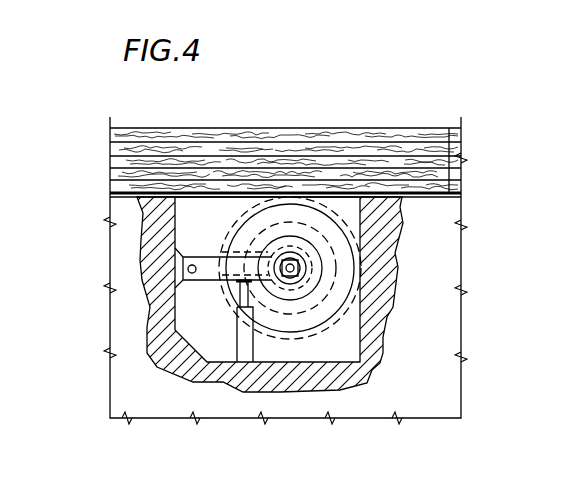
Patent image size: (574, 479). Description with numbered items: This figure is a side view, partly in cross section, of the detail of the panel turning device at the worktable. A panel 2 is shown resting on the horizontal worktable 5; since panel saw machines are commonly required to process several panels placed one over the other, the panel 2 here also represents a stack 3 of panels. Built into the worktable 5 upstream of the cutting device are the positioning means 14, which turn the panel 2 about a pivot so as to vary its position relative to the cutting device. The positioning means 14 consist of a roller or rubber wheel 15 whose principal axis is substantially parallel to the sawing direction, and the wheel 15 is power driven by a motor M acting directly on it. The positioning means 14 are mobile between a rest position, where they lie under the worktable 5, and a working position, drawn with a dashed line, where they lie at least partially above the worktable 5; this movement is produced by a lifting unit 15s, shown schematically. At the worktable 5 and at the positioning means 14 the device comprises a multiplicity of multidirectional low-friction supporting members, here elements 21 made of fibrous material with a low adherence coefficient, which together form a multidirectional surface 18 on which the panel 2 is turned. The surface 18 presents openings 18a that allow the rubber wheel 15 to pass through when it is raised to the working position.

The panel 2 is at (425, 165).
The stack of panels 3 is at (256, 120).
The horizontal worktable 5 is at (448, 193).
The positioning means 14 is at (300, 338).
The roller or rubber wheel 15 is at (296, 263).
The lifting unit 15s is at (227, 346).
The multidirectional surface 18 is at (137, 198).
The openings 18a is at (311, 188).
The elements made of fibrous material 21 is at (122, 193).
The motor M is at (320, 283).